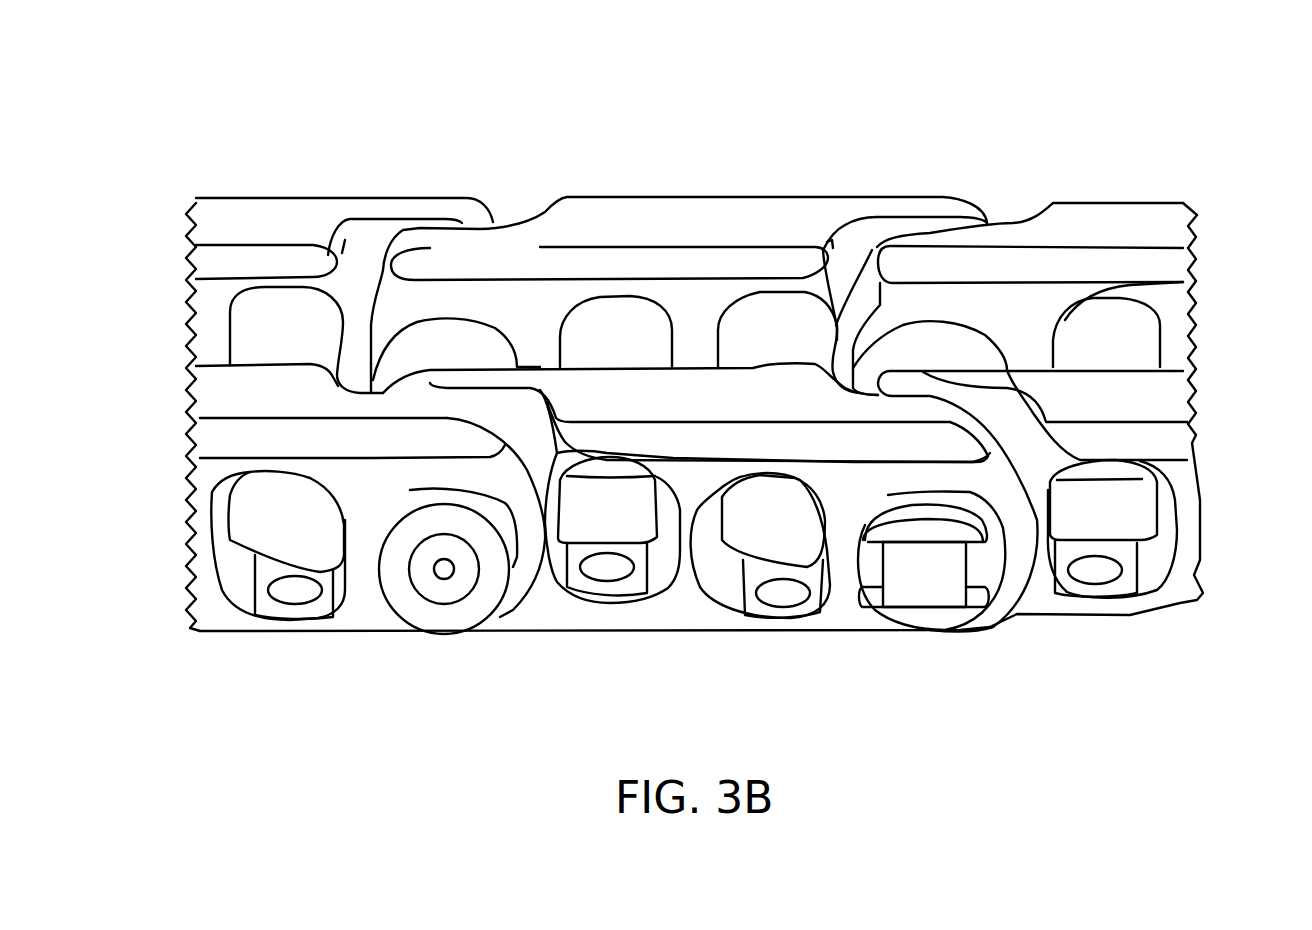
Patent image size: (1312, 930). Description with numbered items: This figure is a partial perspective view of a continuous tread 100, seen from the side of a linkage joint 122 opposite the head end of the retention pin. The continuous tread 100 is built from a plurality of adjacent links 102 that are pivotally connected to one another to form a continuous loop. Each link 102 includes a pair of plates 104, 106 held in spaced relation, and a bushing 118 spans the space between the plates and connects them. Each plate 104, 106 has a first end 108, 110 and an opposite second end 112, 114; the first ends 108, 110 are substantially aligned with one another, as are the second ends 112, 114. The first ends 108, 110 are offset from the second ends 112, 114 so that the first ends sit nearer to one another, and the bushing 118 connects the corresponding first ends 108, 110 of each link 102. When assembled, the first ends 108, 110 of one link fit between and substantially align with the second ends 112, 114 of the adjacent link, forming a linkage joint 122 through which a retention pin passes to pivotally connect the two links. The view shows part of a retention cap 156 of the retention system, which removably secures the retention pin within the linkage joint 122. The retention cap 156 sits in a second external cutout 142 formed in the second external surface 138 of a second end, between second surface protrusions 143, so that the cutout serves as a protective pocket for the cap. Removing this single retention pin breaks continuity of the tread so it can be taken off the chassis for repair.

The continuous tread 100 is at (280, 140).
The link 102 is at (331, 184).
The plate 104 is at (207, 613).
The plate 106 is at (226, 223).
The first end 108 is at (400, 380).
The first end 110 is at (348, 315).
The second end 112 is at (522, 583).
The second end 114 is at (487, 212).
The bushing 118 is at (467, 343).
The linkage joint 122 is at (975, 636).
The second external surface 138 is at (977, 570).
The second external cutout 142 is at (995, 563).
The second surface protrusions 143 is at (912, 612).
The retention cap 156 is at (930, 583).